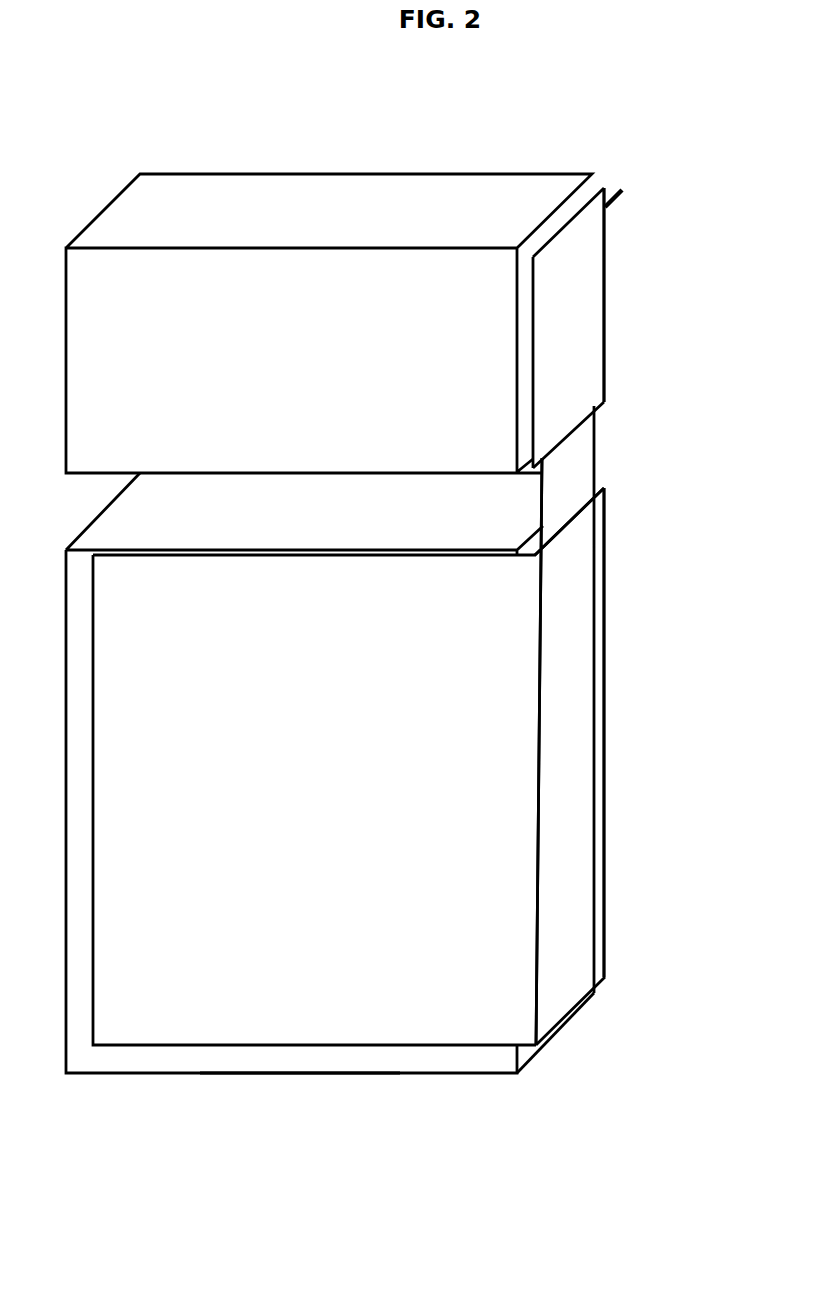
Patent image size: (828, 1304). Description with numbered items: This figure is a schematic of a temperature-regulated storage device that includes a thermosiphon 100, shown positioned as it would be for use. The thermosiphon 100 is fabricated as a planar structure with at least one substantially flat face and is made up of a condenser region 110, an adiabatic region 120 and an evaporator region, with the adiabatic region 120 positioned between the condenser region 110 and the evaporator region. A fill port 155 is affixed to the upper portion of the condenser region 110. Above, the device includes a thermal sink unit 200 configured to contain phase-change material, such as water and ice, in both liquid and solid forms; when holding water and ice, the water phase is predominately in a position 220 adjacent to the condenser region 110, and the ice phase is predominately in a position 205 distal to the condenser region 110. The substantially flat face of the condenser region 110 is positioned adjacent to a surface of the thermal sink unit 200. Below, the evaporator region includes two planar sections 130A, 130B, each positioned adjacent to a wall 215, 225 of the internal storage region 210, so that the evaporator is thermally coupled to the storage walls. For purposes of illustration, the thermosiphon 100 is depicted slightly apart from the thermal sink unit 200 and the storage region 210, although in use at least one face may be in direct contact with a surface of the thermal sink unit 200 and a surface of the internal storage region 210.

The thermosiphon 100 is at (647, 173).
The condenser region 110 is at (568, 328).
The adiabatic region 120 is at (569, 725).
The planar section of evaporator region 130A is at (570, 751).
The planar section of evaporator region 130B is at (314, 800).
The fill port 155 is at (620, 168).
The thermal sink unit 200 is at (329, 323).
The position distal to condenser region 205 is at (103, 230).
The internal storage region 210 is at (304, 773).
The wall of internal storage region 215 is at (294, 1108).
The position adjacent to condenser region 220 is at (405, 230).
The wall of internal storage region 225 is at (559, 1070).